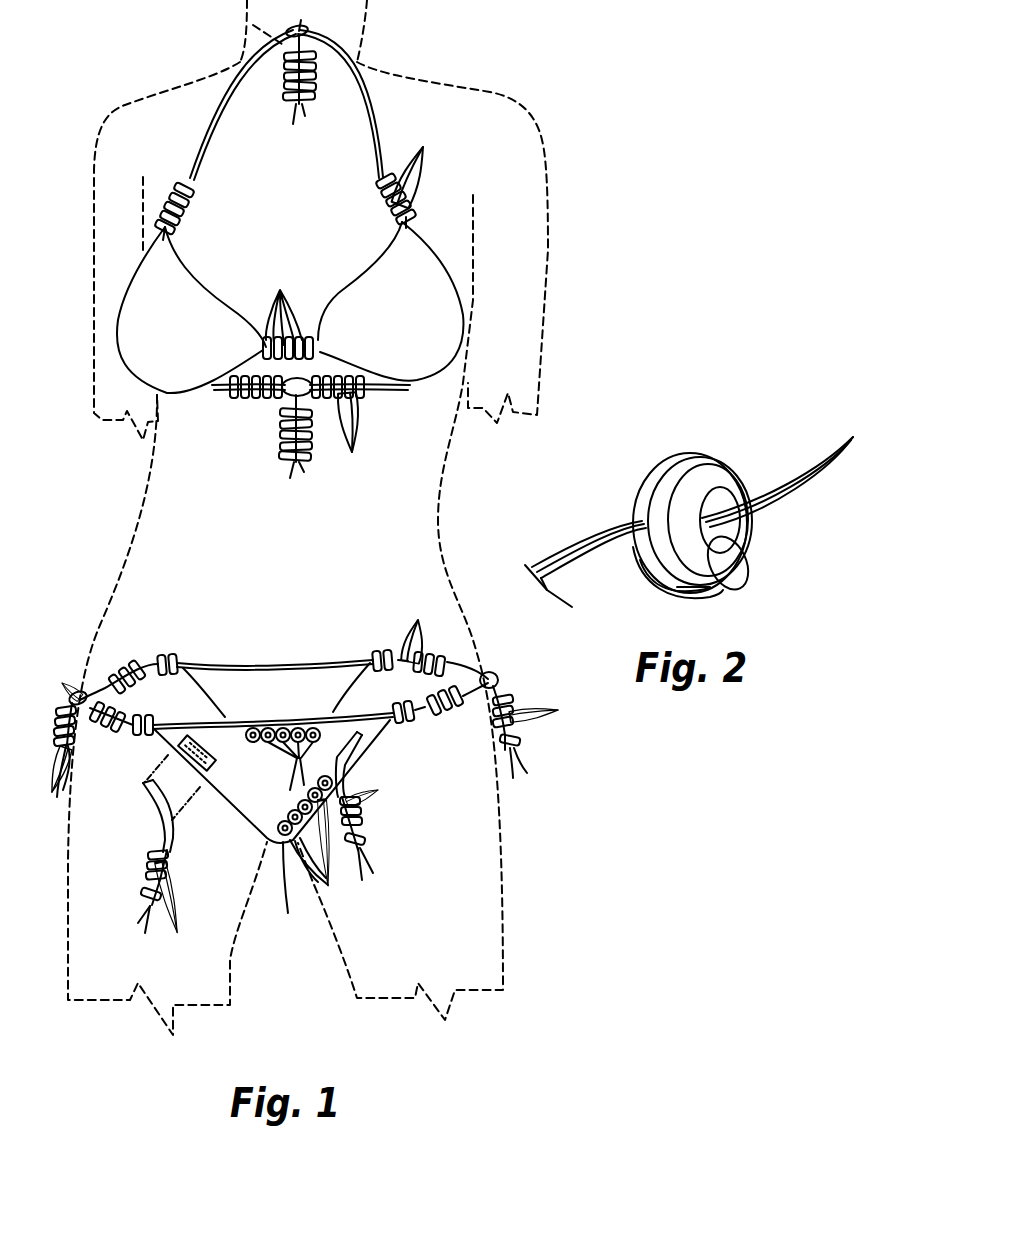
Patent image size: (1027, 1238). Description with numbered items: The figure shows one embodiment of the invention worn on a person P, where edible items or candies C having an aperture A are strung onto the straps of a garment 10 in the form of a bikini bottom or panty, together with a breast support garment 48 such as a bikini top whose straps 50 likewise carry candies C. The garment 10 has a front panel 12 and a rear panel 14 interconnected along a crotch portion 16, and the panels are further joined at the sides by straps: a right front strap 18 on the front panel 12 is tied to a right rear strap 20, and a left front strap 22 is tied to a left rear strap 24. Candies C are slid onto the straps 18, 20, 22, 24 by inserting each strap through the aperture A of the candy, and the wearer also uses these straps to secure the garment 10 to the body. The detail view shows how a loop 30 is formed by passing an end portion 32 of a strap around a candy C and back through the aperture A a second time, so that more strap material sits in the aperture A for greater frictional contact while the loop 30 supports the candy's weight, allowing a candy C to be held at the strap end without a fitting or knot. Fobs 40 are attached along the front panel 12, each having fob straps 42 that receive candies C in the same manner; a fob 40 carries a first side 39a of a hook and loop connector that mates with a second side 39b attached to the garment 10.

In FIG. 1, the garment 10 is at (282, 774).
In FIG. 1, the front panel 12 is at (258, 808).
In FIG. 1, the rear panel 14 is at (322, 683).
In FIG. 1, the crotch portion 16 is at (289, 905).
In FIG. 1, the right front strap 18 is at (125, 728).
In FIG. 2, the right front strap 18 is at (562, 542).
In FIG. 1, the right rear strap 20 is at (148, 662).
In FIG. 2, the right rear strap 20 is at (562, 542).
In FIG. 1, the left front strap 22 is at (422, 720).
In FIG. 2, the left front strap 22 is at (562, 542).
In FIG. 1, the left rear strap 24 is at (460, 665).
In FIG. 2, the left rear strap 24 is at (558, 553).
In FIG. 1, the loop 30 is at (45, 776).
In FIG. 2, the loop 30 is at (665, 499).
In FIG. 2, the end portion 32 is at (782, 513).
In FIG. 1, the first side of hook and loop connector 39a is at (261, 848).
In FIG. 1, the second side of hook and loop connector 39b is at (217, 752).
In FIG. 1, the fob 40 is at (130, 883).
In FIG. 1, the fob strap 42 is at (173, 836).
In FIG. 1, the breast support garment 48 is at (292, 247).
In FIG. 1, the straps 50 is at (378, 116).
In FIG. 2, the aperture A is at (716, 501).
In FIG. 1, the edible item or candy C is at (313, 542).
In FIG. 2, the edible item or candy C is at (690, 454).
In FIG. 1, the person wearing swimsuit P is at (513, 95).